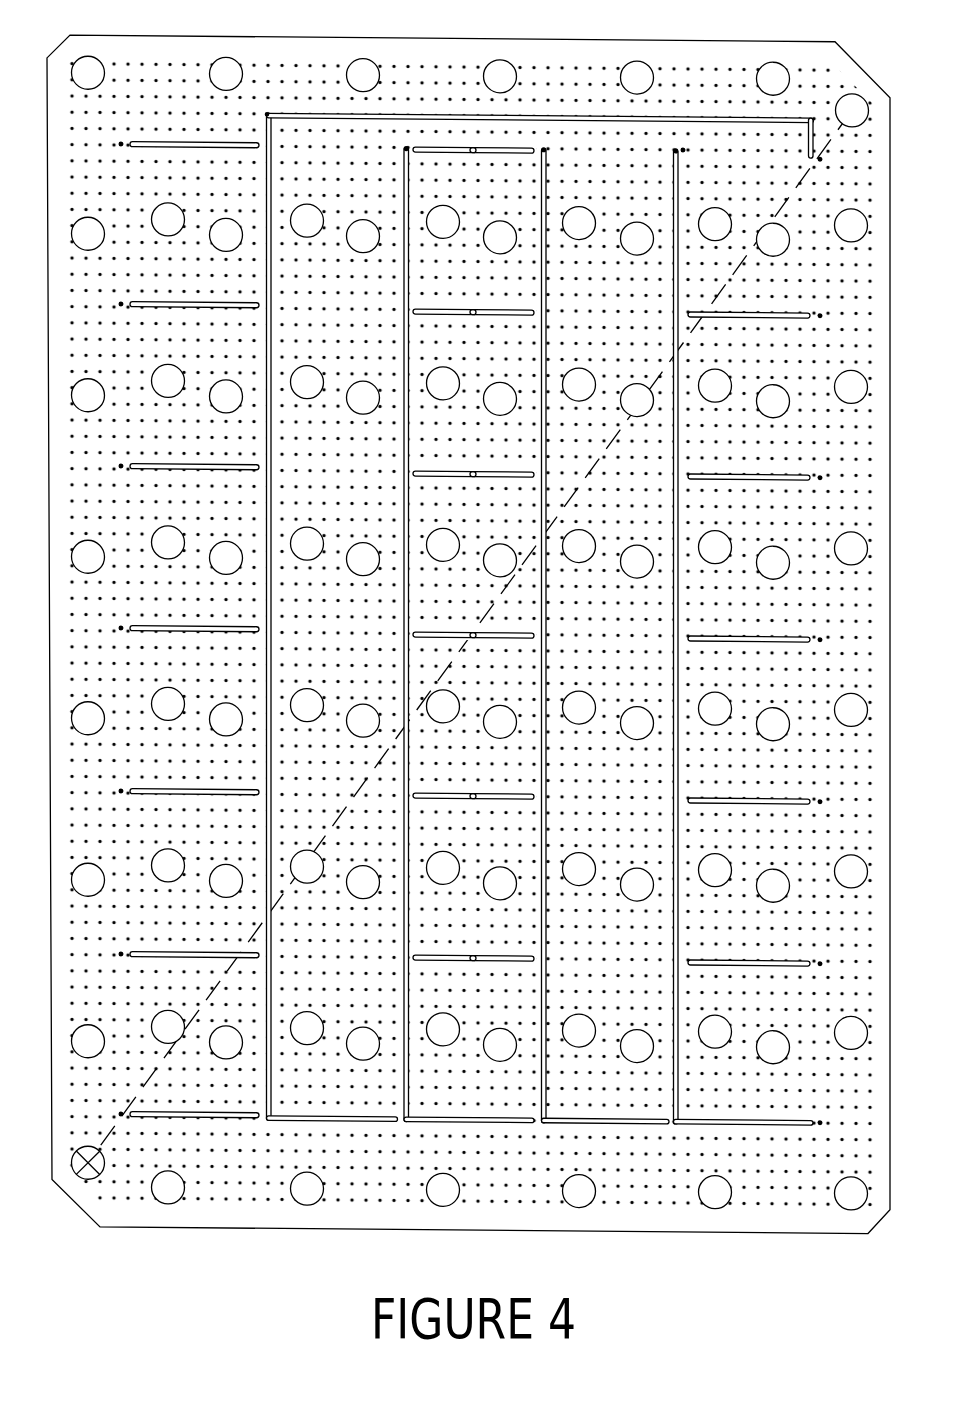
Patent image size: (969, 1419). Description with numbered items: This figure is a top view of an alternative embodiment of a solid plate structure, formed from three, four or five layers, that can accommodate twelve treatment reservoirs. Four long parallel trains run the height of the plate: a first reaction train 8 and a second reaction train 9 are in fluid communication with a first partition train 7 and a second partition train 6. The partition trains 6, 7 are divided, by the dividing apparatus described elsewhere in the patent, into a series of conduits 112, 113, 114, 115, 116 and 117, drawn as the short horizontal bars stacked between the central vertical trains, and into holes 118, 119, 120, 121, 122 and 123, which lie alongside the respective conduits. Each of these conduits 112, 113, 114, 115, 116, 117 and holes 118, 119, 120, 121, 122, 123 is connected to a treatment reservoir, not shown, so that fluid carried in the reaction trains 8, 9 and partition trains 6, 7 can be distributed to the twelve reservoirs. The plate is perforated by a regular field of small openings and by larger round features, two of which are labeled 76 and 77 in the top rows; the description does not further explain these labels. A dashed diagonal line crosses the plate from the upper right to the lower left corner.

The second partition train 6 is at (404, 588).
The first partition train 7 is at (546, 582).
The first reaction train 8 is at (673, 566).
The second reaction train 9 is at (273, 646).
The mounting hole 76 is at (355, 63).
The mounting hole 77 is at (360, 222).
The conduit 112 is at (438, 951).
The conduit 113 is at (436, 789).
The conduit 114 is at (440, 629).
The conduit 115 is at (430, 467).
The conduit 116 is at (430, 305).
The conduit 117 is at (433, 142).
The hole 118 is at (472, 957).
The hole 119 is at (472, 795).
The hole 120 is at (473, 633).
The hole 121 is at (473, 473).
The hole 122 is at (473, 311).
The hole 123 is at (472, 149).